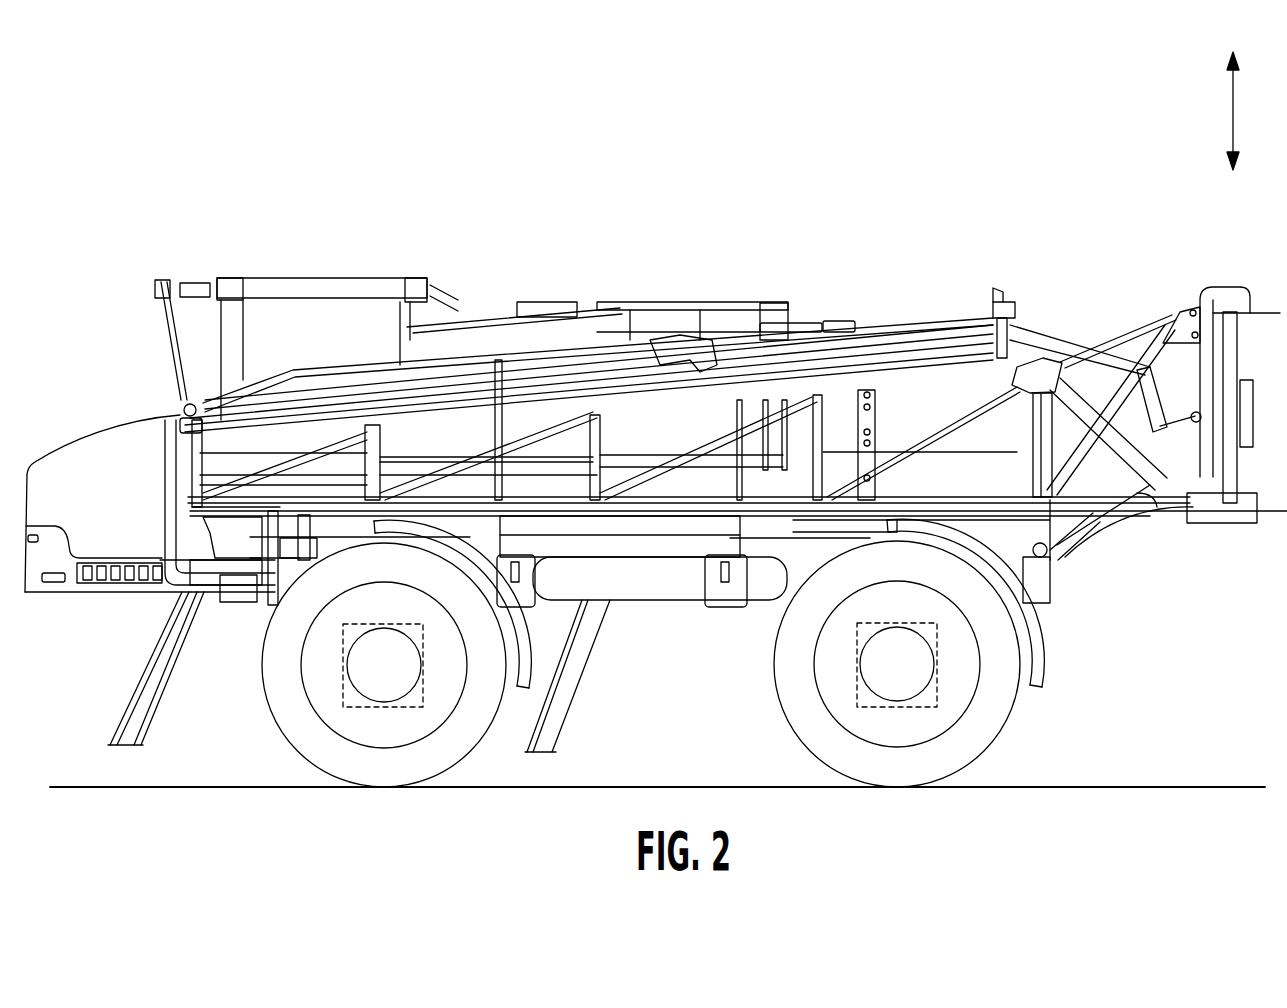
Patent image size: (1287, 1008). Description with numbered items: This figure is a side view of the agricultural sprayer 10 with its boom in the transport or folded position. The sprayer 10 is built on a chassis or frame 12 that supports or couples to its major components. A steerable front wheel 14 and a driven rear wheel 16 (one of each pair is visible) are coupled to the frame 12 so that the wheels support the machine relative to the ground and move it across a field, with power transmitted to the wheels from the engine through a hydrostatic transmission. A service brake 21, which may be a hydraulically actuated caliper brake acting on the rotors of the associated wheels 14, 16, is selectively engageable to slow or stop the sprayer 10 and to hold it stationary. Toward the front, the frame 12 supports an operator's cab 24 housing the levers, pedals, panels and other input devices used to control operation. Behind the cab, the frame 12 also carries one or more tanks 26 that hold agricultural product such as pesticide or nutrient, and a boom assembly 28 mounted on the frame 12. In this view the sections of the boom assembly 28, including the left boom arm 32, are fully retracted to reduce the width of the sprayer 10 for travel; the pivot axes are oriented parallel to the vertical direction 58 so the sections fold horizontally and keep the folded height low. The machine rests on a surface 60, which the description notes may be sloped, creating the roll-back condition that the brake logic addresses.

The agricultural sprayer 10 is at (1043, 236).
The frame 12 is at (652, 585).
The front wheel 14 is at (463, 729).
The rear wheel 16 is at (972, 737).
The service brake 21 is at (343, 684).
The operator's cab 24 is at (307, 278).
The tank 26 is at (543, 327).
The boom assembly 28 is at (875, 277).
The left boom arm 32 is at (829, 318).
The vertical direction 58 is at (1233, 112).
The sloped surface 60 is at (1173, 790).